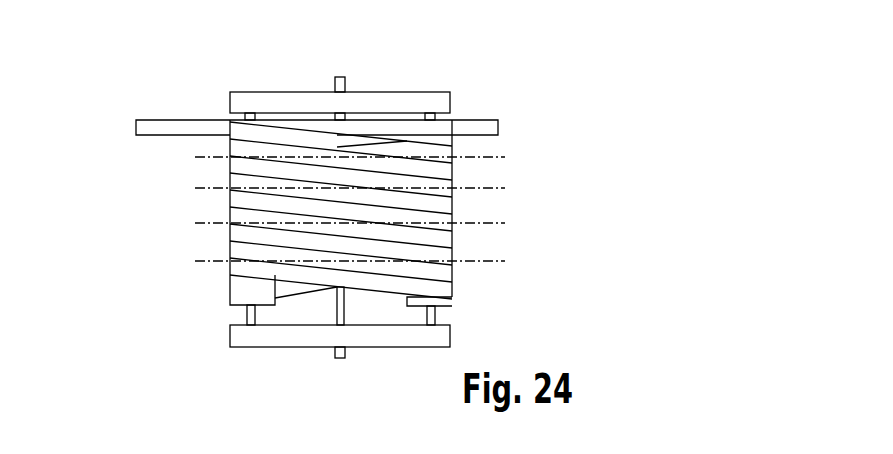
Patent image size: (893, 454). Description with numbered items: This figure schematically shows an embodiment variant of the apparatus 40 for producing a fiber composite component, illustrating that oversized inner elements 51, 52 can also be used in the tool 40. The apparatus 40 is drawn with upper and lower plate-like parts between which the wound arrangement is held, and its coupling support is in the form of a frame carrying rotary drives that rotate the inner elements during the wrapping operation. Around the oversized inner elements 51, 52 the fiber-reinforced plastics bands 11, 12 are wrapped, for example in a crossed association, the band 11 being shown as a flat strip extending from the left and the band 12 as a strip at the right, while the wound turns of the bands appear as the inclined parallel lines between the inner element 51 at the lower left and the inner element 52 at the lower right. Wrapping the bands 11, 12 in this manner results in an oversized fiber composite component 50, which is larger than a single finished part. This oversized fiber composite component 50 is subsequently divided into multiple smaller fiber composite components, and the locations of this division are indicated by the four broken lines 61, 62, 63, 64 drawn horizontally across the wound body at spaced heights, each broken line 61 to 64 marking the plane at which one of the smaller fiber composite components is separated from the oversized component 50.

The fiber-reinforced plastics band 11 is at (155, 132).
The fiber-reinforced plastics band 12 is at (495, 119).
The apparatus 40 is at (439, 91).
The oversized fiber composite component 50 is at (193, 235).
The oversized inner element 51 is at (230, 297).
The oversized inner element 52 is at (457, 302).
The broken line 61 is at (490, 157).
The broken line 62 is at (490, 188).
The broken line 63 is at (490, 223).
The broken line 64 is at (490, 261).